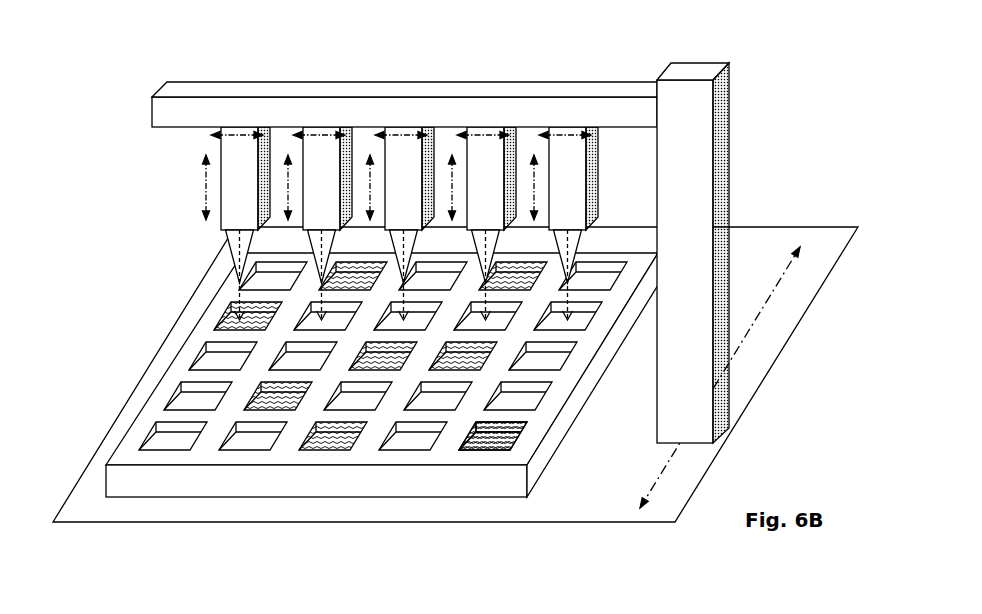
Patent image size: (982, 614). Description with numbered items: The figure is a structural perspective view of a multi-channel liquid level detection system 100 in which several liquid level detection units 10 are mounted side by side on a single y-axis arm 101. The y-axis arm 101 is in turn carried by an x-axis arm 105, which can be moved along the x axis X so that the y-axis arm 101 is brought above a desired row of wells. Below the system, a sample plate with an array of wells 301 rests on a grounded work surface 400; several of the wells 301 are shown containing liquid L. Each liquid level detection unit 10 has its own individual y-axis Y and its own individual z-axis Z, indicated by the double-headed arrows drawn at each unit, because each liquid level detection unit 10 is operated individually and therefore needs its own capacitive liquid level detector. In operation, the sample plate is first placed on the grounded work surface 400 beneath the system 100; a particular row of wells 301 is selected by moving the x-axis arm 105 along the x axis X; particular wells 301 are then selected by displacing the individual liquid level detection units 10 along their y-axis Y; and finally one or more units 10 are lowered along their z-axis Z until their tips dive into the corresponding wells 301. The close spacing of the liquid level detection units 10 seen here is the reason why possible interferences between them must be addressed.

The liquid level detection unit 10 is at (228, 190).
The multi-channel liquid level detection system 100 is at (811, 67).
The y-axis arm 101 is at (167, 110).
The x-axis arm 105 is at (788, 268).
The well 301 is at (163, 438).
The grounded work surface 400 is at (173, 337).
The liquid in well L is at (512, 443).
The x axis X is at (772, 316).
The y-axis Y is at (240, 133).
The z-axis Z is at (364, 187).